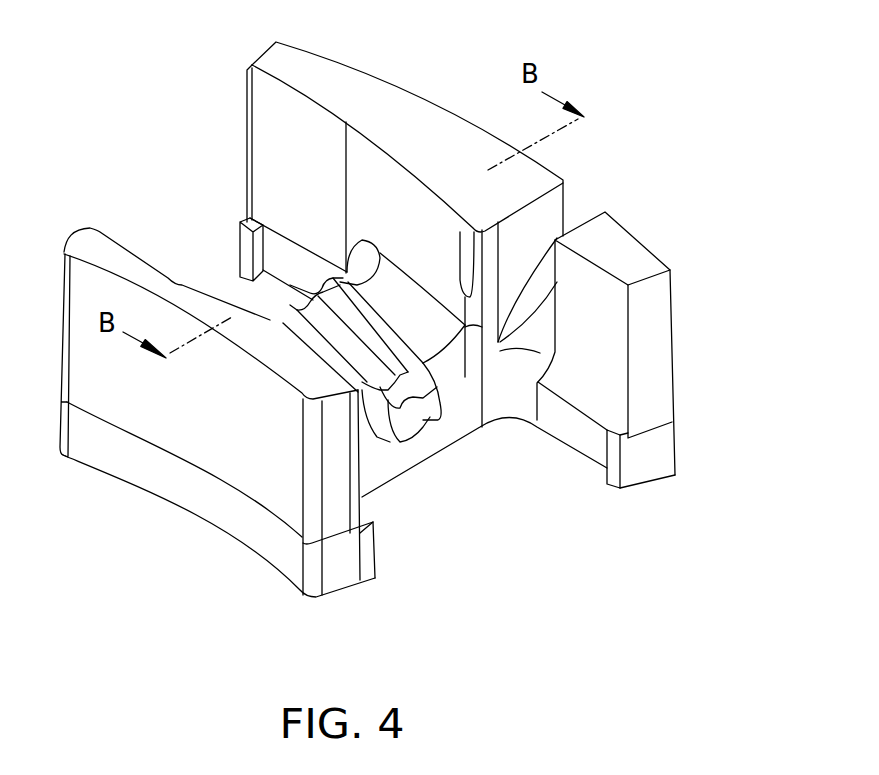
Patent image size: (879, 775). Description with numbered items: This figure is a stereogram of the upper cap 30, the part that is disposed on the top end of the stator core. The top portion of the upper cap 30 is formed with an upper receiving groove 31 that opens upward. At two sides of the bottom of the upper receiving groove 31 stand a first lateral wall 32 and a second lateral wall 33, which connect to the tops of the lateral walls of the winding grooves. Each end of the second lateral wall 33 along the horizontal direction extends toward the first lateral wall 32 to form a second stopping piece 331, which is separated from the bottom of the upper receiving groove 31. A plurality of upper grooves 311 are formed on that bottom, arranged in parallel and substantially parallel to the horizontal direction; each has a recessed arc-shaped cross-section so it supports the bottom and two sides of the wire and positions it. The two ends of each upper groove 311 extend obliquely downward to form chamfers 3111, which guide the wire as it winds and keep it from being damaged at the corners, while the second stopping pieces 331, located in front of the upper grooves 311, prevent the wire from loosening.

The upper cap 30 is at (453, 97).
The upper receiving groove 31 is at (410, 250).
The upper grooves 311 is at (415, 330).
The chamfers 3111 is at (400, 395).
The first lateral wall 32 is at (657, 322).
The second lateral wall 33 is at (242, 453).
The second stopping piece 331 is at (374, 556).